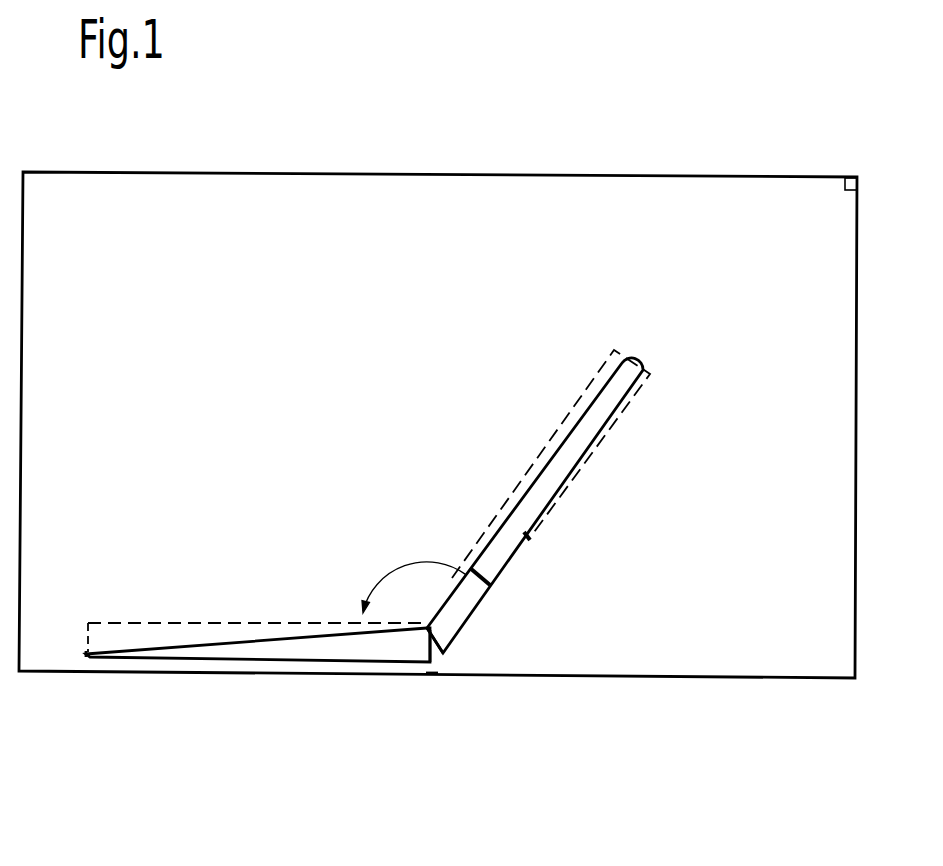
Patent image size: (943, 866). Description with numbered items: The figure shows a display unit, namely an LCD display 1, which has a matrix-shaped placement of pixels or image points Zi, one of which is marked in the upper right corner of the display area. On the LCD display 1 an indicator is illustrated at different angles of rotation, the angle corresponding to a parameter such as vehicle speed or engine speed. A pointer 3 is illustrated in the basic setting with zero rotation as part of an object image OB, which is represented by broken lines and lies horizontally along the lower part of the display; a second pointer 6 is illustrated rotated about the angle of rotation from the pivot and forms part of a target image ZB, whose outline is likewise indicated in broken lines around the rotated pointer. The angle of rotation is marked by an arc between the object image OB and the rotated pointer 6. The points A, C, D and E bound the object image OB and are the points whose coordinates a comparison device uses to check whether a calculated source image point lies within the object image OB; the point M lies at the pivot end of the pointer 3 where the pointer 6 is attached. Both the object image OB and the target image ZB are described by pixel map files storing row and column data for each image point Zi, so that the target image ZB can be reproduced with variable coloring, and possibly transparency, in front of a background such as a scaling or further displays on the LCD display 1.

The LCD display 1 is at (697, 177).
The image point Zi is at (856, 177).
The target image ZB is at (575, 418).
The pointer 6 is at (519, 535).
The pointer 3 is at (262, 650).
The point D is at (433, 630).
The point C is at (92, 622).
The object image OB is at (145, 623).
The point A is at (85, 657).
The pivot point M is at (428, 645).
The point E is at (432, 674).